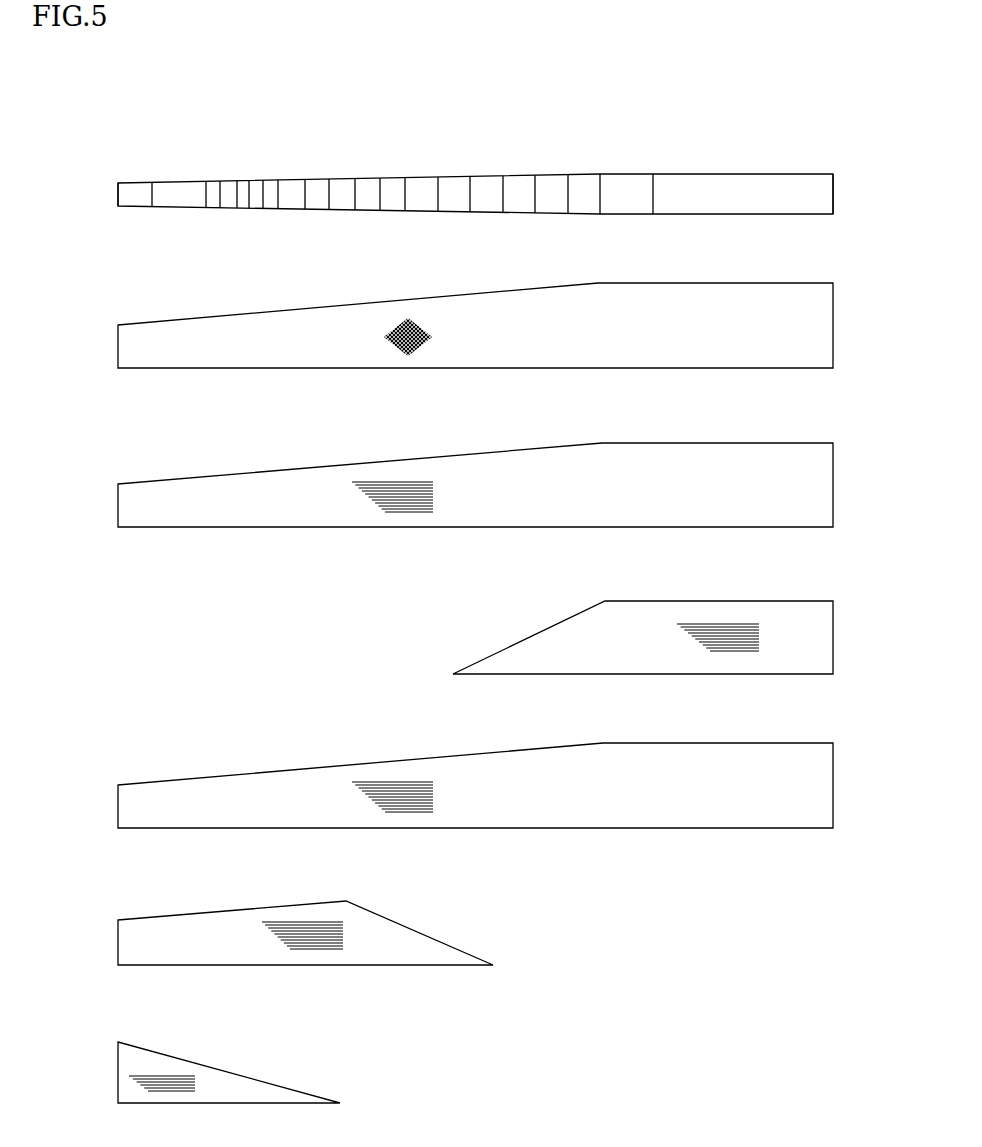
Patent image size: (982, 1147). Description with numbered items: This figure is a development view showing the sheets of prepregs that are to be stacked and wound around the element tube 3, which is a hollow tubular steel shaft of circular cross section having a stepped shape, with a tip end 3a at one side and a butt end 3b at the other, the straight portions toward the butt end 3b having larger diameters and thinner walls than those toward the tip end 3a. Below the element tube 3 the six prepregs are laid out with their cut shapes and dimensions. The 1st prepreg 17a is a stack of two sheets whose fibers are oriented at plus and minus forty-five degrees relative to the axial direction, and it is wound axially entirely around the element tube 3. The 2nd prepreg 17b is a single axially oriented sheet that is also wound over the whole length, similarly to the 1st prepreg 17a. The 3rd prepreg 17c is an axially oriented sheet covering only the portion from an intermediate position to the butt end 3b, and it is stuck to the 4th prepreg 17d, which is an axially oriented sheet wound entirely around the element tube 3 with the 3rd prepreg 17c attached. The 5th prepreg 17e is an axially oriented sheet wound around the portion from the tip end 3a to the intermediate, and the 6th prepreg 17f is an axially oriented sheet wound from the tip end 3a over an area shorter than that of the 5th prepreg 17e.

The element tube 3 is at (479, 170).
The tip end 3a is at (118, 186).
The butt end 3b is at (833, 192).
The 1st prepreg 17a is at (299, 312).
The 2nd prepreg 17b is at (259, 472).
The 3rd prepreg 17c is at (522, 640).
The 4th prepreg 17d is at (330, 766).
The 5th prepreg 17e is at (431, 937).
The 6th prepreg 17f is at (272, 1082).